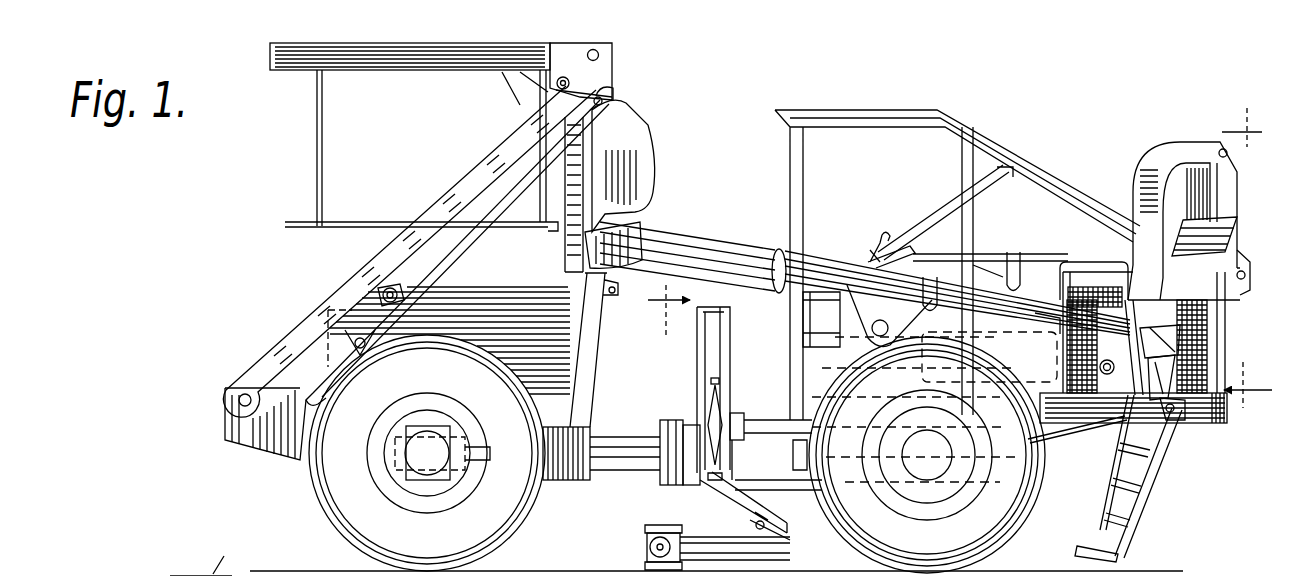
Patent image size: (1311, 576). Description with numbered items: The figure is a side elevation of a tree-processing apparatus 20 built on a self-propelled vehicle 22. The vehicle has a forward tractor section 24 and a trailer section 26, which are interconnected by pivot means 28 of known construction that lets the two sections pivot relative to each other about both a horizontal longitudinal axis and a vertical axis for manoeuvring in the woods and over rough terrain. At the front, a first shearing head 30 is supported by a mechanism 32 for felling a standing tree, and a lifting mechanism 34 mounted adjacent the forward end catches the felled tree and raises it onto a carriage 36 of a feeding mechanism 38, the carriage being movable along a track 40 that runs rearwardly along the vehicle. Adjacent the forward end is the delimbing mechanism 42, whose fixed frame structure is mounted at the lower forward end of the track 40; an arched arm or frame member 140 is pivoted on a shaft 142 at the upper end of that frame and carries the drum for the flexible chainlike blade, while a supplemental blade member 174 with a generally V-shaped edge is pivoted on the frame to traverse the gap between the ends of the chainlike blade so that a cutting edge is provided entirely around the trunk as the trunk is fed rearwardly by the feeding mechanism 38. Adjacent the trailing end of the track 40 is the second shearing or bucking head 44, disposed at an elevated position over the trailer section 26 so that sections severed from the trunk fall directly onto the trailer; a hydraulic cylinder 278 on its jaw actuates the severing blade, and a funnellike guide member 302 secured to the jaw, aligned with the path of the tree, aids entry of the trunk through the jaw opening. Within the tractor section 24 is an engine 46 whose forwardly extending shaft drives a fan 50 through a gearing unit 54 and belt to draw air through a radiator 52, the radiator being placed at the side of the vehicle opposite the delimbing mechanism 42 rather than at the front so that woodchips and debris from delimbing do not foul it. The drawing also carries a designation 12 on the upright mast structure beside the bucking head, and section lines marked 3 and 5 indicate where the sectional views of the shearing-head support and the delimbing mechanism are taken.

The mast 12 is at (600, 84).
The hydraulic cylinder 278 is at (616, 92).
The second shearing head 44 is at (658, 108).
The funnellike guide member 302 is at (640, 133).
The apparatus 20 is at (840, 106).
The self-propelled vehicle 22 is at (985, 170).
The carriage 36 is at (952, 251).
The track 40 is at (812, 250).
The feeding mechanism 38 is at (1013, 316).
The engine 46 is at (914, 366).
The radiator 52 is at (1097, 260).
The delimbing mechanism 42 is at (1248, 236).
The arched arm or frame member 140 is at (1178, 150).
The shaft 142 is at (1230, 155).
The supplemental blade member 174 is at (1220, 230).
The fan 50 is at (1207, 345).
The gearing unit 54 is at (1207, 361).
The section line 5 is at (1248, 258).
The forward tractor section 24 is at (1222, 419).
The lifting mechanism 34 is at (1108, 448).
The section line 3 is at (662, 310).
The mechanism 32 is at (740, 392).
The pivot means 28 is at (666, 424).
The first shearing head 30 is at (697, 523).
The trailer section 26 is at (277, 446).